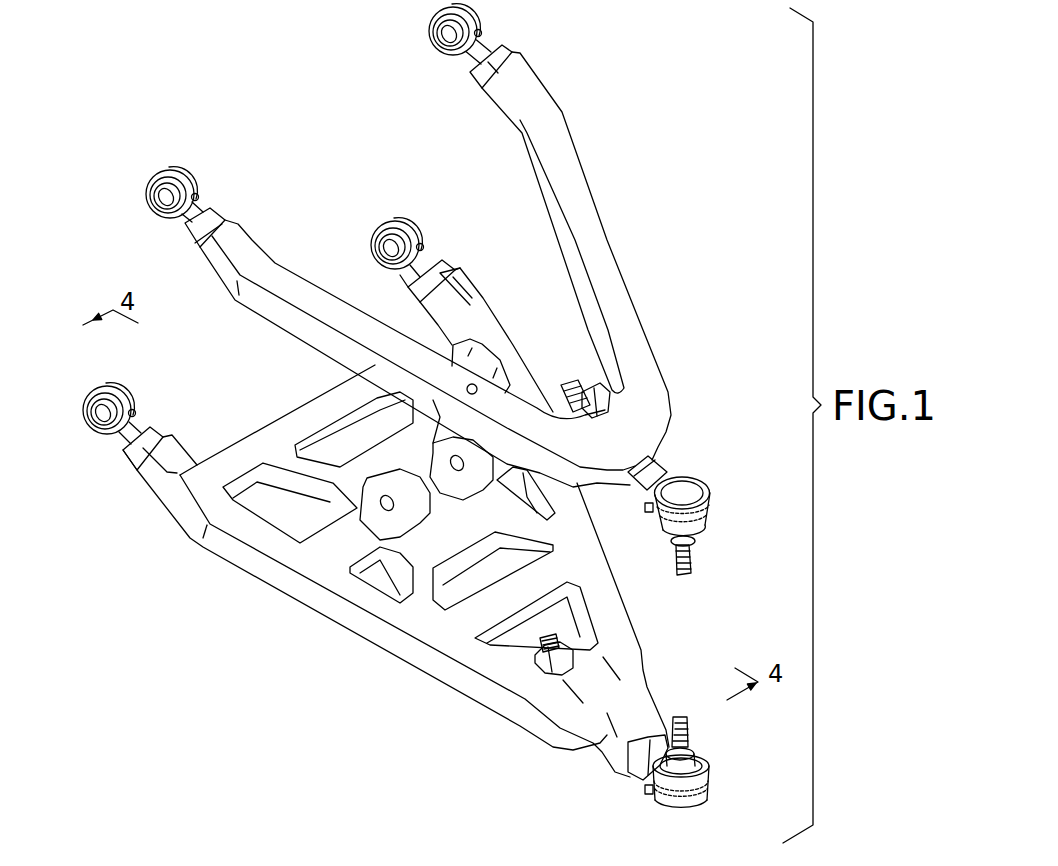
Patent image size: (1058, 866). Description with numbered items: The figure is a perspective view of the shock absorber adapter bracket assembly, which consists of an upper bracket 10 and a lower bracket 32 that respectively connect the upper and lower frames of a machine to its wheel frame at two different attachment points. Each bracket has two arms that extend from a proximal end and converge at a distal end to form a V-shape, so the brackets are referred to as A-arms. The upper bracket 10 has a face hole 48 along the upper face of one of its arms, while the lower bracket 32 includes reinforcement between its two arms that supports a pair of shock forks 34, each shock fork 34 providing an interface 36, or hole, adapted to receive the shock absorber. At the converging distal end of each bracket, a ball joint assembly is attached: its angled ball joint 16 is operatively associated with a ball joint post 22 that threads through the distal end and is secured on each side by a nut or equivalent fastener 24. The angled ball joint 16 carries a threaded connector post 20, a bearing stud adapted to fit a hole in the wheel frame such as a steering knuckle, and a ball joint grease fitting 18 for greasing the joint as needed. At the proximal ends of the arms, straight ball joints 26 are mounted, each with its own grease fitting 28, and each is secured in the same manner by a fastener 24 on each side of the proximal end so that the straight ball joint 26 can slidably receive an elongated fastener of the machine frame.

The upper bracket 10 is at (593, 220).
The angled ball joint 16 is at (692, 490).
The ball joint grease fitting 18 is at (650, 510).
The threaded connector post 20 is at (688, 563).
The ball joint post 22 is at (583, 385).
The nut or equivalent fastener 24 is at (197, 244).
The straight ball joint 26 is at (437, 37).
The grease fitting 28 is at (483, 32).
The lower bracket 32 is at (262, 572).
The shock fork 34 is at (397, 482).
The interface 36 is at (387, 502).
The face hole 48 is at (466, 378).